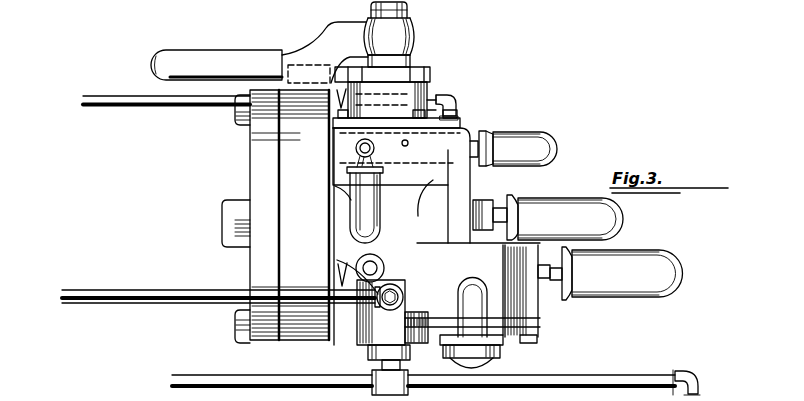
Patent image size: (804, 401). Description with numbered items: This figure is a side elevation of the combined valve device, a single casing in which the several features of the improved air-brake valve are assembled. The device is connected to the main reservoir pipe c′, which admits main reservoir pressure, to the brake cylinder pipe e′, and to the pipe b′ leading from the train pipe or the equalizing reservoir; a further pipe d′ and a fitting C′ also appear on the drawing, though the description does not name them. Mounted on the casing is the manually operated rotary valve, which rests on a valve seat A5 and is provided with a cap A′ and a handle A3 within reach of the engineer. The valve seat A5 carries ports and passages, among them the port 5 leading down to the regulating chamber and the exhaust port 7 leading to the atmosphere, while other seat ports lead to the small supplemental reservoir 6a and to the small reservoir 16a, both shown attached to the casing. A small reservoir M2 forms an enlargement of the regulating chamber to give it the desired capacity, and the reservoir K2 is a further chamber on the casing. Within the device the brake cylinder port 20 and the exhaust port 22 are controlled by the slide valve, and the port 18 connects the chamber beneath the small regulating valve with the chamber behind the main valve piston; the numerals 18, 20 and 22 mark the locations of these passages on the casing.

The pipe b′ is at (135, 100).
The handle A3 is at (267, 70).
The cap A′ is at (404, 88).
The valve seat A5 is at (446, 142).
The exhaust port 7 is at (410, 143).
The small reservoir 16a is at (364, 213).
The port 5 is at (457, 196).
The supplemental reservoir 6a is at (509, 151).
The connection nipple K2 is at (548, 217).
The small reservoir M2 is at (611, 274).
The exhaust port 22 is at (385, 264).
The brake cylinder port 20 is at (402, 294).
The brake cylinder pipe e′ is at (215, 297).
The pipe d′ is at (255, 382).
The tee fitting C′ is at (372, 367).
The port 18 is at (421, 341).
The main reservoir pipe c′ is at (612, 380).